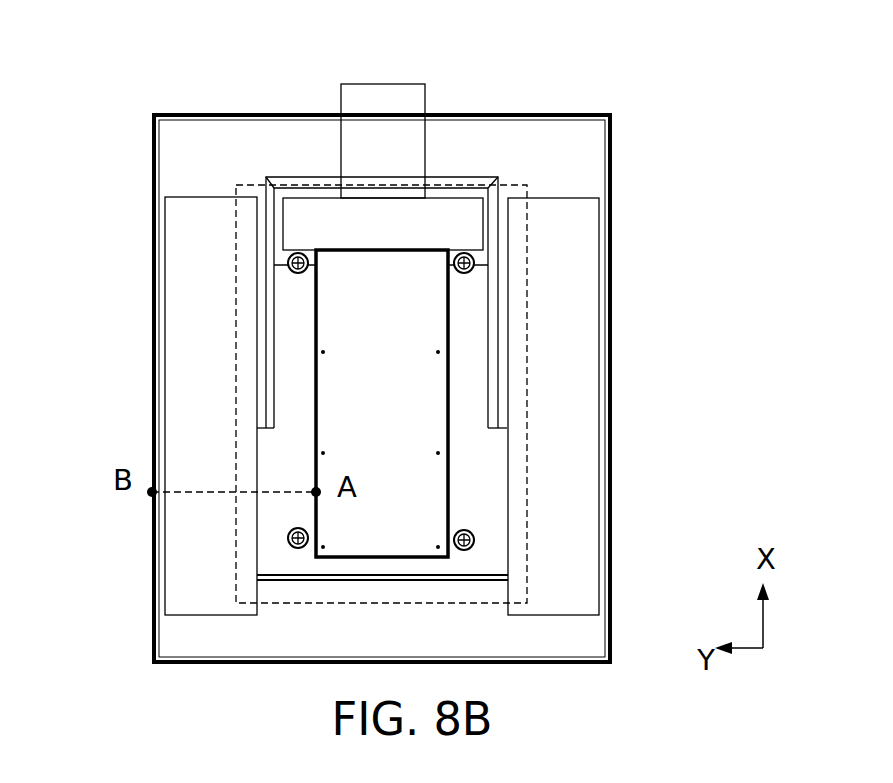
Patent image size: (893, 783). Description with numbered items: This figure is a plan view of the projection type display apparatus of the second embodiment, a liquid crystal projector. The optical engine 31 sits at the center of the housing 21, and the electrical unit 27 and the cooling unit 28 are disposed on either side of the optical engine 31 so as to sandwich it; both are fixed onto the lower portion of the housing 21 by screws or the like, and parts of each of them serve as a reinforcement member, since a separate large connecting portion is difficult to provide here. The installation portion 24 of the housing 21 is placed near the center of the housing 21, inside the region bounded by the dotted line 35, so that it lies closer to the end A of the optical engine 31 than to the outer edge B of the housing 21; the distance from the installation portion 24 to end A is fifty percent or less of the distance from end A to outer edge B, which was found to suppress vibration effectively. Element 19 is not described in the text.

The connector block 19 is at (395, 90).
The housing 21 is at (613, 173).
The installation portion 24 is at (288, 260).
The electrical unit 27 is at (555, 407).
The cooling unit 28 is at (212, 363).
The optical engine 31 is at (448, 490).
The dotted line 35 is at (232, 418).